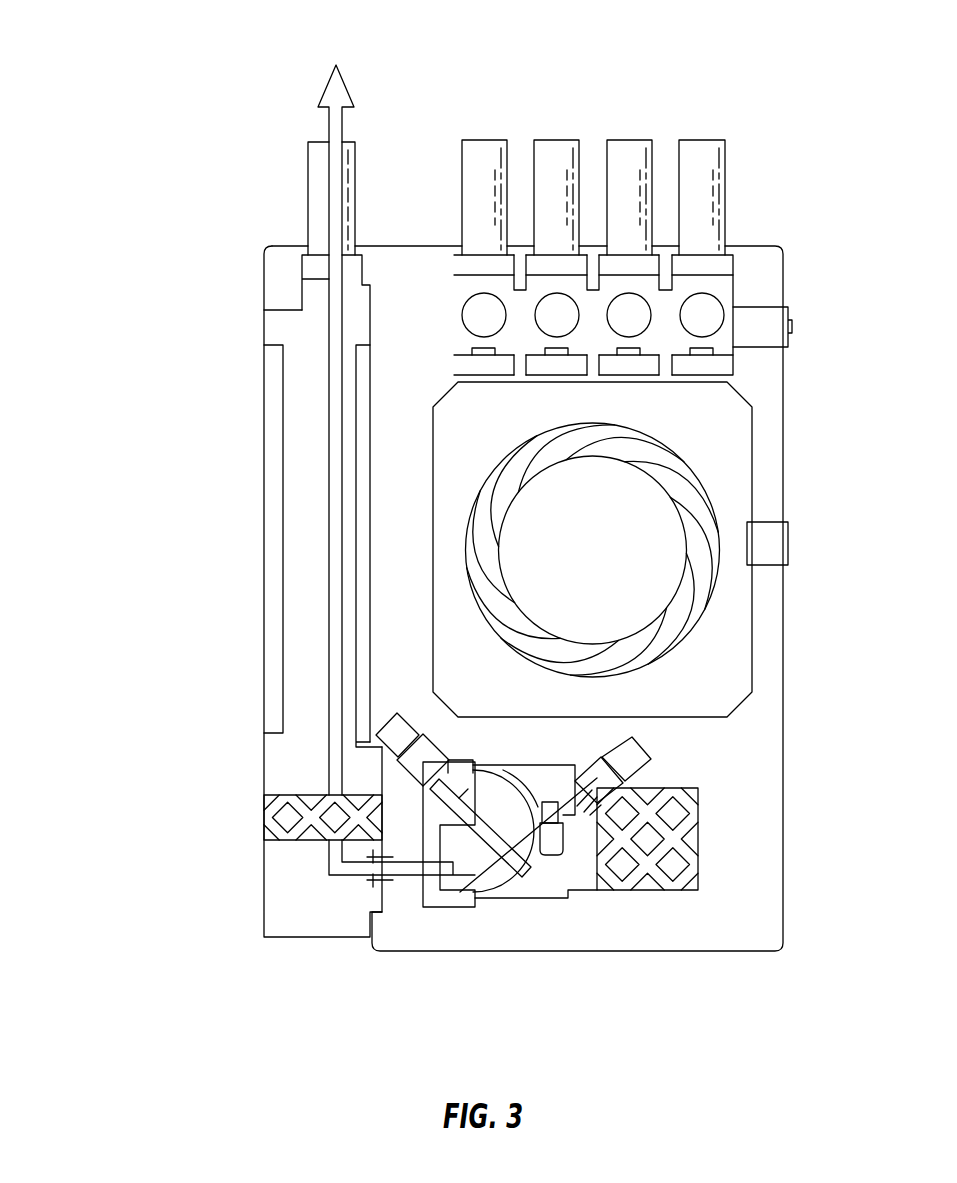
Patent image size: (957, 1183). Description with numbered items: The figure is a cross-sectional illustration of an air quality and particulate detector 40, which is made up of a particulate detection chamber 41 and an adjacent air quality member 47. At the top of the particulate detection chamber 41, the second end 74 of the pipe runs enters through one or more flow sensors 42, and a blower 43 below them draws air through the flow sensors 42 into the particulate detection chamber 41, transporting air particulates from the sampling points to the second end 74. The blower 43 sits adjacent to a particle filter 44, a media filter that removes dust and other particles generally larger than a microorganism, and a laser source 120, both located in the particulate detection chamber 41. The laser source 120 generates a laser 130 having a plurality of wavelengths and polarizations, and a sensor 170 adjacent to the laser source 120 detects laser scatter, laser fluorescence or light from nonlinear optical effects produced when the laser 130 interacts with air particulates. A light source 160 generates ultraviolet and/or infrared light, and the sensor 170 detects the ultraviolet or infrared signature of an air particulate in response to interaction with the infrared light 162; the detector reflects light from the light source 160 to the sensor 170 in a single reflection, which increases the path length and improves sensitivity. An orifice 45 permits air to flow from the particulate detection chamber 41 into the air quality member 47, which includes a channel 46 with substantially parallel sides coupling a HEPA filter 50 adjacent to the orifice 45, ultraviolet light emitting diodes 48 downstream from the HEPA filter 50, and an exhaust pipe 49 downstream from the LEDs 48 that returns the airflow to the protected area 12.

The protected area 12 is at (318, 80).
The air quality and particulate detector 40 is at (174, 222).
The particulate detection chamber 41 is at (788, 1018).
The flow sensors 42 is at (702, 315).
The blower 43 is at (728, 593).
The particle filter 44 is at (688, 867).
The orifice 45 is at (375, 848).
The channel 46 is at (306, 521).
The air quality member 47 is at (265, 1018).
The ultraviolet light emitting diodes 48 is at (353, 476).
The exhaust pipe 49 is at (308, 172).
The HEPA filter 50 is at (283, 795).
The second end 74 is at (733, 117).
The laser source 120 is at (627, 767).
The laser 130 is at (492, 838).
The light source 160 is at (417, 768).
The infrared light 162 is at (472, 810).
The sensor 170 is at (538, 807).